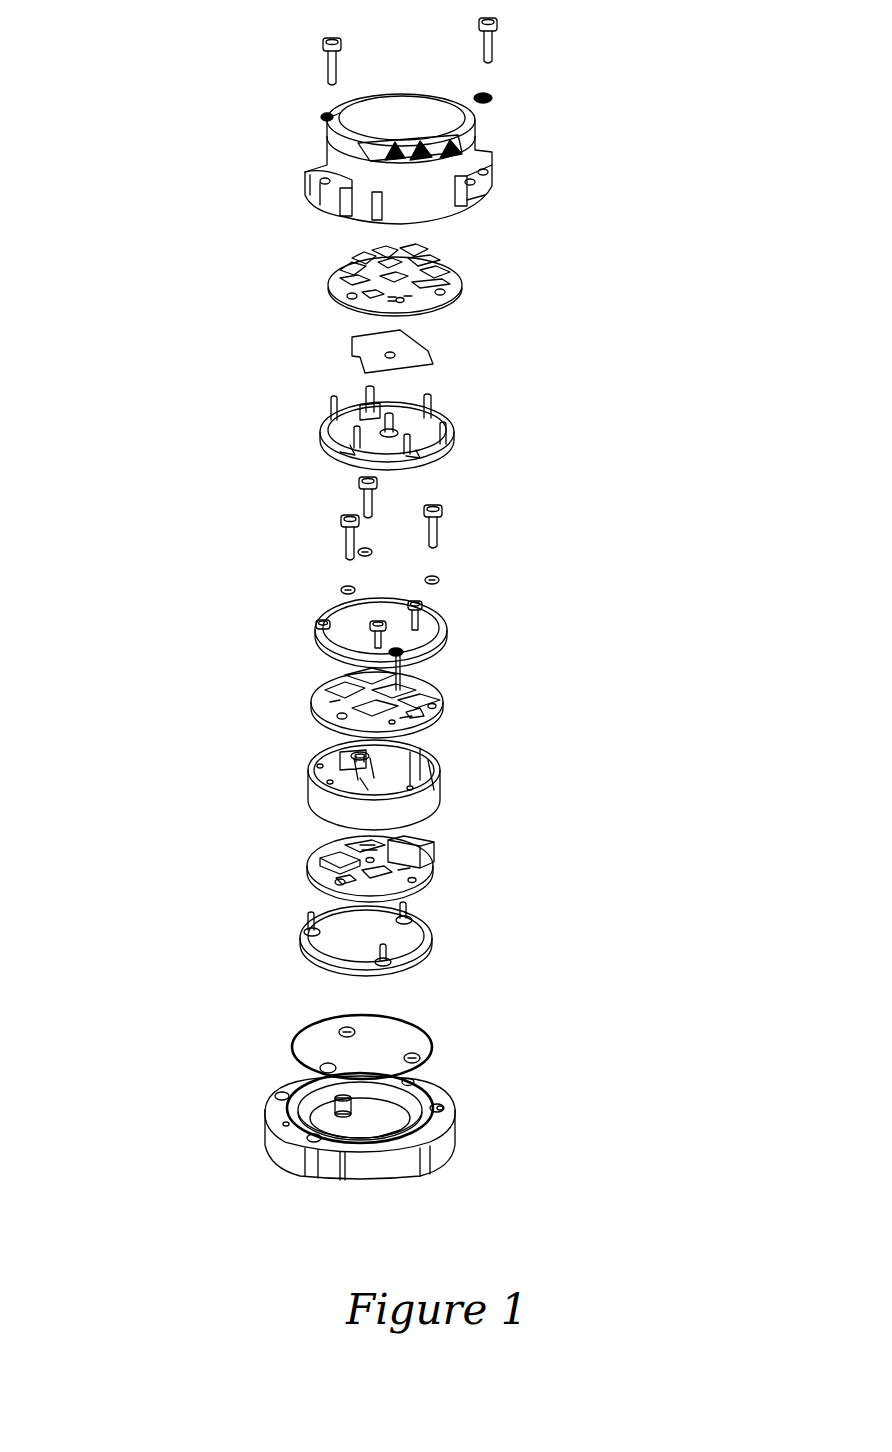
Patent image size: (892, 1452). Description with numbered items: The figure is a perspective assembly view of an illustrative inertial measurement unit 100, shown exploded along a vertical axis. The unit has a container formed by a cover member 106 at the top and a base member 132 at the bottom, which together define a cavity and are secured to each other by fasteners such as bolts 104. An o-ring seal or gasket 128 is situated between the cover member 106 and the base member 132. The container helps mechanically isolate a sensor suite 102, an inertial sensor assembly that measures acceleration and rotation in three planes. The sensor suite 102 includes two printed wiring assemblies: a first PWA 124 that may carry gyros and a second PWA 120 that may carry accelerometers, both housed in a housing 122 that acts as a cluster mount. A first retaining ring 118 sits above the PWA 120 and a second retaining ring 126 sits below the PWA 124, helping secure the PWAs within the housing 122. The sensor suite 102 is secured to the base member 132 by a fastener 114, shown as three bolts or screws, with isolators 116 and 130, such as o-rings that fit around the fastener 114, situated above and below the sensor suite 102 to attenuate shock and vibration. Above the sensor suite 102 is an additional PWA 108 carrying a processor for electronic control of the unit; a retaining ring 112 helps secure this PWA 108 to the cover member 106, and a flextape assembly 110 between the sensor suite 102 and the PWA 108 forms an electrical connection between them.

The inertial measurement unit 100 is at (236, 38).
The sensor suite 102 is at (308, 603).
The bolts 104 is at (330, 68).
The cover member 106 is at (438, 197).
The additional PWA 108 is at (455, 287).
The flextape assembly 110 is at (425, 358).
The retaining ring 112 is at (452, 447).
The fastener 114 is at (438, 530).
The isolator 116 is at (445, 583).
The first retaining ring 118 is at (440, 648).
The second PWA 120 is at (440, 715).
The housing 122 is at (430, 800).
The first PWA 124 is at (435, 870).
The second retaining ring 126 is at (432, 955).
The o-ring seal or gasket 128 is at (437, 1042).
The isolator 130 is at (437, 1095).
The base member 132 is at (433, 1140).